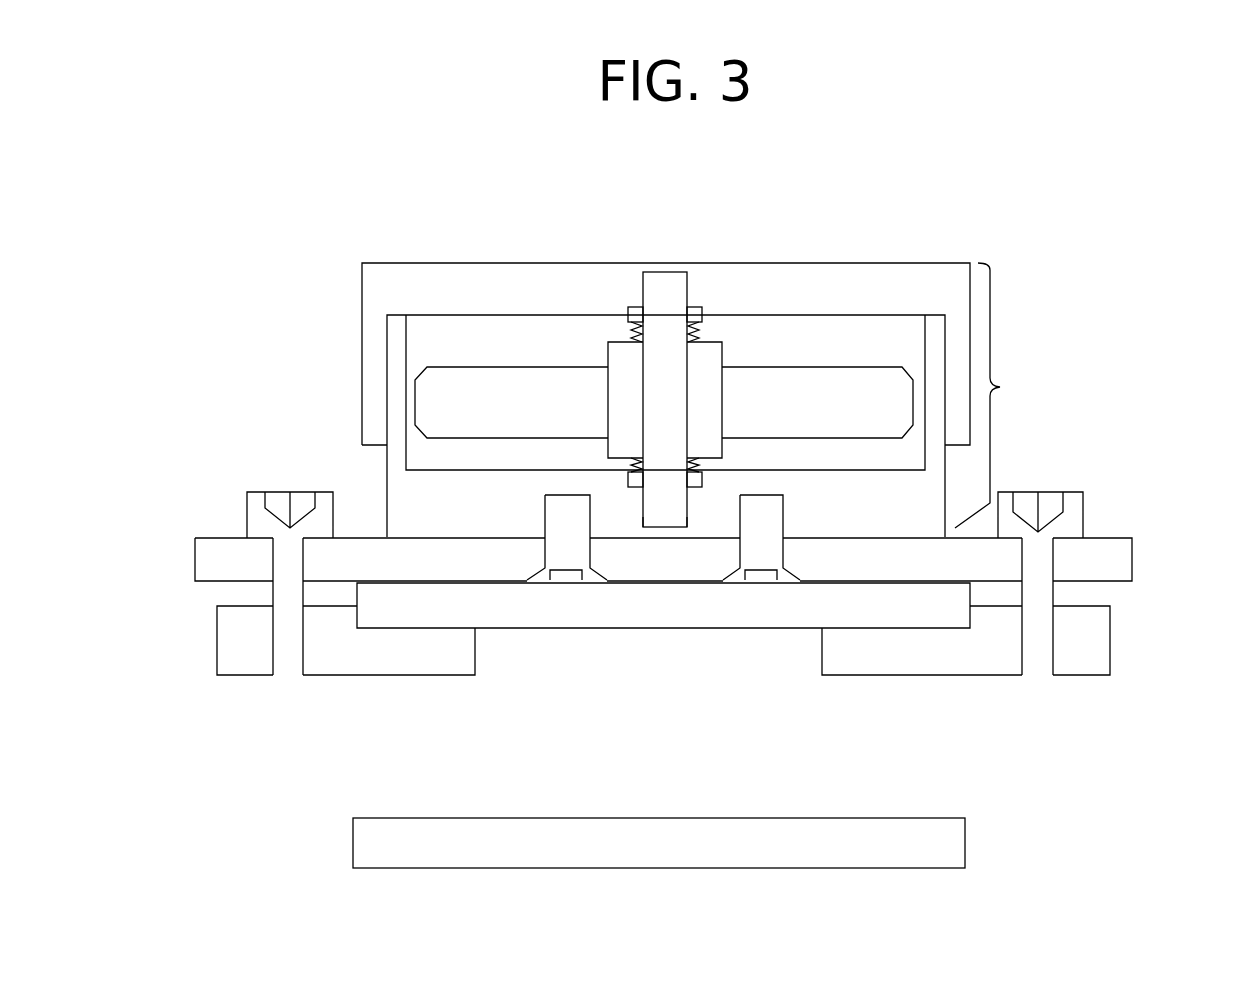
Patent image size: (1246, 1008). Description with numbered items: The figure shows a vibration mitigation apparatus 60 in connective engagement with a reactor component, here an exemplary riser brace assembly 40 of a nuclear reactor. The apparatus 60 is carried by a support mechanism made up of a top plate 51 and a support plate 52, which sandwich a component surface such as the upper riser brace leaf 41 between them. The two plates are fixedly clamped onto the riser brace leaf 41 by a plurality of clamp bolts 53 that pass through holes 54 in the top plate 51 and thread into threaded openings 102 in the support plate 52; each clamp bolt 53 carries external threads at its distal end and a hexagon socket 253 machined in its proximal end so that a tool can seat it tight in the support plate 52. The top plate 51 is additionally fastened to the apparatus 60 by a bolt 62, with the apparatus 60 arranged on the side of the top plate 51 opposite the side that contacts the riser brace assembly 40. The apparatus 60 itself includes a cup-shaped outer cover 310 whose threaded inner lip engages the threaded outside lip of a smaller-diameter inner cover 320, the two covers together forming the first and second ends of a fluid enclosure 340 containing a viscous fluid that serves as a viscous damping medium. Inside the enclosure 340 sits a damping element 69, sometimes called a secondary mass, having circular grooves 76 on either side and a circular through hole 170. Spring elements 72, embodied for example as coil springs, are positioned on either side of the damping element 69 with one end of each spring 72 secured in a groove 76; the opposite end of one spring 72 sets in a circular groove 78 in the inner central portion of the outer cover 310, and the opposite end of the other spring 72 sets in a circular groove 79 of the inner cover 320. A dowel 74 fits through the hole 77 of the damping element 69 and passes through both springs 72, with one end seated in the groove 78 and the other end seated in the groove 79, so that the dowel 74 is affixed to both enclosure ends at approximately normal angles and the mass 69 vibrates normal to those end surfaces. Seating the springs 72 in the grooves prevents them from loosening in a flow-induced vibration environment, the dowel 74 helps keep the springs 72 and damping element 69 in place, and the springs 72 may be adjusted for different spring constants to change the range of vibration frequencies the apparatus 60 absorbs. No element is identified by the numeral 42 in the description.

The outer cover 310 is at (360, 292).
The inner cover 320 is at (386, 478).
The fluid enclosure 340 is at (475, 332).
The damping element 69 is at (853, 367).
The circular through hole 170 is at (640, 344).
The circular groove 78 is at (699, 308).
The spring elements 72 is at (630, 330).
The circular grooves 76 is at (722, 340).
The hole 77 is at (694, 346).
The circular groove 79 is at (626, 487).
The dowel 74 is at (689, 497).
The bolt 62 is at (543, 507).
The vibration mitigation apparatus 60 is at (996, 395).
The hexagon socket 253 is at (304, 486).
The clamp bolts 53 is at (1087, 492).
The threaded openings 102 is at (271, 644).
The holes 54 is at (312, 543).
The top plate 51 is at (1133, 563).
The upper riser brace leaf 41 is at (577, 630).
The support plate 52 is at (1112, 658).
The bottom plate 42 is at (887, 818).
The riser brace assembly 40 is at (1010, 767).